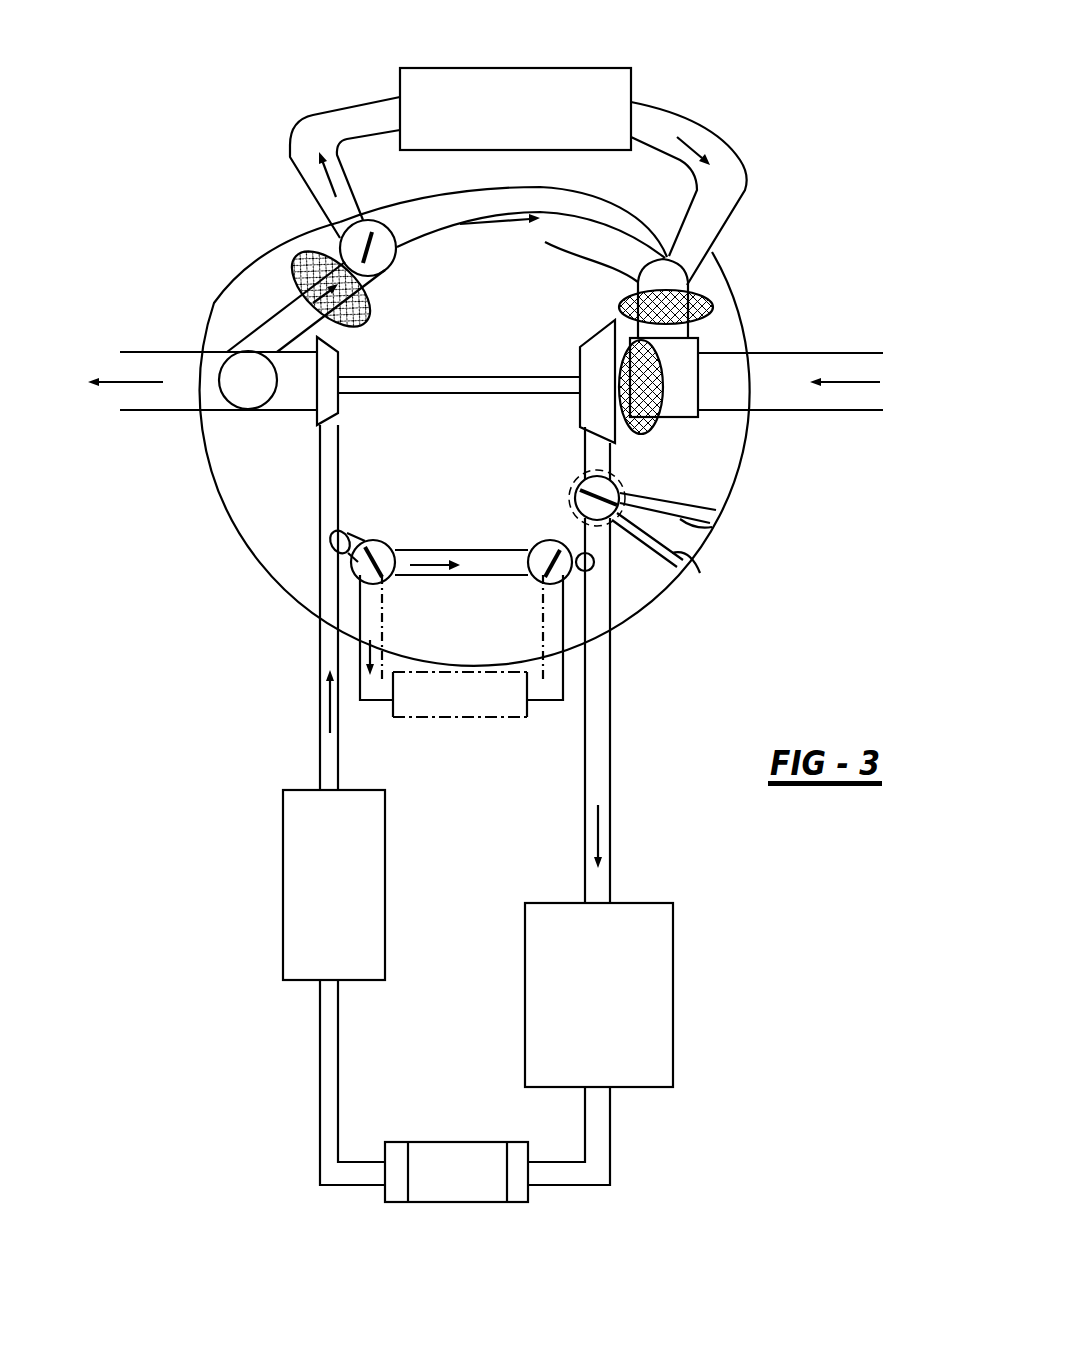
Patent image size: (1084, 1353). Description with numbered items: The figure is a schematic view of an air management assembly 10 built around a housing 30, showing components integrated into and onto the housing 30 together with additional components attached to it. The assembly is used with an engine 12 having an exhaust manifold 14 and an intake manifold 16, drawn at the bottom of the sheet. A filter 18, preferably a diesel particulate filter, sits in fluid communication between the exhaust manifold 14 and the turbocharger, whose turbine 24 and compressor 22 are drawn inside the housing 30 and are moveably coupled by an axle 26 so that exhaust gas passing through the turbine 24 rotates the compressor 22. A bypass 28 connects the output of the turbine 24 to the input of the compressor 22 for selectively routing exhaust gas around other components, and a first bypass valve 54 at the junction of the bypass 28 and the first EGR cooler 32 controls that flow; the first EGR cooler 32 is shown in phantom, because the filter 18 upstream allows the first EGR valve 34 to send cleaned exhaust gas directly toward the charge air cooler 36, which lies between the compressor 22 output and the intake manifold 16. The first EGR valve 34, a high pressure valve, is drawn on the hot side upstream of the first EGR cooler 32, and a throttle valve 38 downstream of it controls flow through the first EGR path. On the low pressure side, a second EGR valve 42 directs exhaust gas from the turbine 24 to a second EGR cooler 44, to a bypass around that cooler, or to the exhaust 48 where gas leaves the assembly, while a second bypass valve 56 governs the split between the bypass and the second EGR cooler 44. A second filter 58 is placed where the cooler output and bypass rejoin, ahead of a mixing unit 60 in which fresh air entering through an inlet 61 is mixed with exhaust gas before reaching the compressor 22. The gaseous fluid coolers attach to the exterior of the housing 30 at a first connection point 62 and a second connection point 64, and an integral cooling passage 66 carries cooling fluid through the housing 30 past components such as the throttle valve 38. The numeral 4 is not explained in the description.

The air management assembly 10 is at (200, 152).
The engine 12 is at (460, 1133).
The exhaust manifold 14 is at (387, 1140).
The intake manifold 16 is at (518, 1203).
The filter 18 is at (385, 883).
The compressor 22 is at (577, 350).
The turbine 24 is at (343, 363).
The axle 26 is at (500, 375).
The bypass 28 is at (487, 550).
The housing 30 is at (737, 473).
The first EGR cooler 32 is at (457, 717).
The first EGR valve 34 is at (348, 532).
The charge air cooler 36 is at (673, 947).
The throttle valve 38 is at (573, 473).
The second EGR valve 42 is at (213, 370).
The second EGR cooler 44 is at (583, 68).
The exhaust 48 is at (152, 352).
The first bypass valve 54 is at (387, 537).
The second bypass valve 56 is at (387, 272).
The second filter 58 is at (637, 433).
The mixing unit 60 is at (677, 415).
The inlet 61 is at (833, 410).
The first connection point 62 is at (360, 203).
The second connection point 64 is at (678, 227).
The integral cooling passage 66 is at (695, 542).
The conduit 4 is at (618, 518).